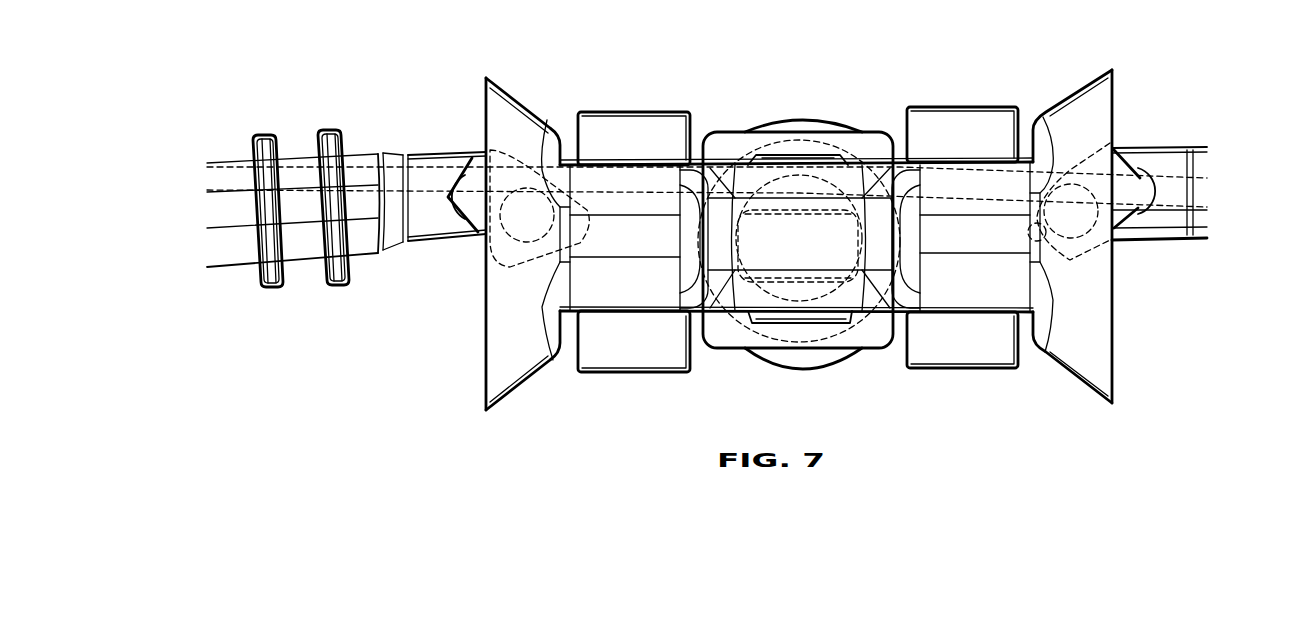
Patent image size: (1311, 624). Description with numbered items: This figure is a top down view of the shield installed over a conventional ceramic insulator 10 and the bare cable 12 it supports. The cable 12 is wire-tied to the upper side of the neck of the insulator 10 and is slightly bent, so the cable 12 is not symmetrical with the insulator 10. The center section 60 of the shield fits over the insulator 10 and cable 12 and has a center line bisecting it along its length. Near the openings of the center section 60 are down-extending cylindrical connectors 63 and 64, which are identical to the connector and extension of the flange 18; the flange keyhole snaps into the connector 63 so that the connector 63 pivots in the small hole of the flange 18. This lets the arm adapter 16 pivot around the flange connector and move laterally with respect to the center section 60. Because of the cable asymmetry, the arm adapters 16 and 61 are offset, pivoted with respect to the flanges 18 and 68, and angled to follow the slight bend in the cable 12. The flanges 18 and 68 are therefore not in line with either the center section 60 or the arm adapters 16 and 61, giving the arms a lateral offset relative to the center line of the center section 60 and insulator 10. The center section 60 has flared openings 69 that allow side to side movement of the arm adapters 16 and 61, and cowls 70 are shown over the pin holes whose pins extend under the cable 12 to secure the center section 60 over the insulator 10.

The insulator 10 is at (797, 124).
The cable 12 is at (647, 173).
The arm adapter 16 is at (428, 152).
The flange 18 is at (515, 180).
The center section 60 is at (925, 67).
The arm adapter 61 is at (1157, 147).
The cylindrical connector 63 is at (550, 232).
The cylindrical connector 64 is at (1050, 235).
The flange 68 is at (1100, 153).
The flared openings 69 is at (1086, 85).
The cowls 70 is at (618, 123).